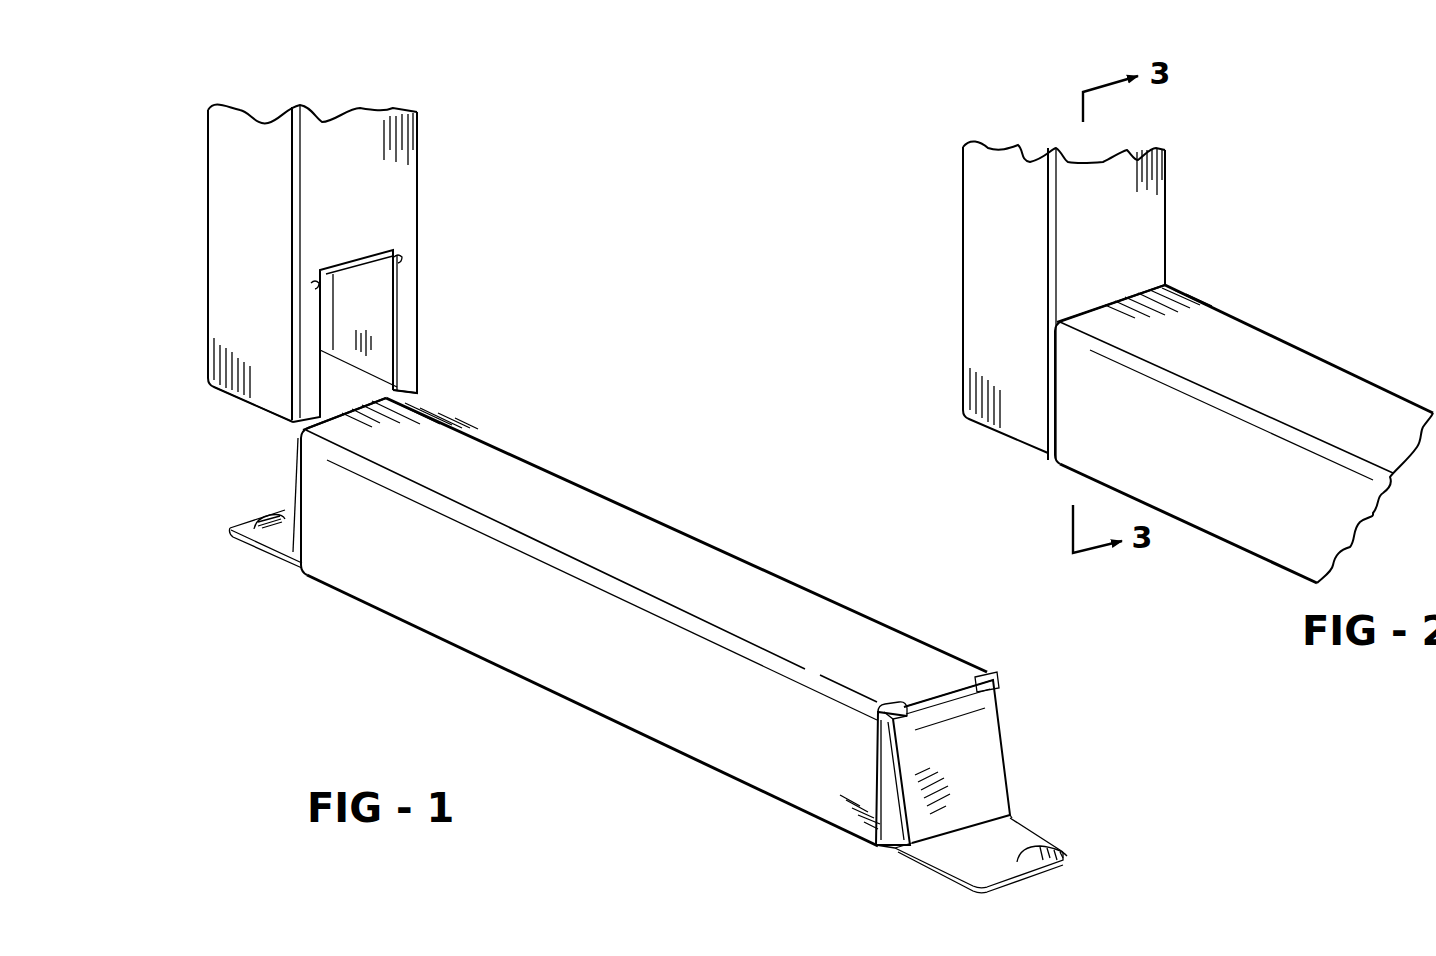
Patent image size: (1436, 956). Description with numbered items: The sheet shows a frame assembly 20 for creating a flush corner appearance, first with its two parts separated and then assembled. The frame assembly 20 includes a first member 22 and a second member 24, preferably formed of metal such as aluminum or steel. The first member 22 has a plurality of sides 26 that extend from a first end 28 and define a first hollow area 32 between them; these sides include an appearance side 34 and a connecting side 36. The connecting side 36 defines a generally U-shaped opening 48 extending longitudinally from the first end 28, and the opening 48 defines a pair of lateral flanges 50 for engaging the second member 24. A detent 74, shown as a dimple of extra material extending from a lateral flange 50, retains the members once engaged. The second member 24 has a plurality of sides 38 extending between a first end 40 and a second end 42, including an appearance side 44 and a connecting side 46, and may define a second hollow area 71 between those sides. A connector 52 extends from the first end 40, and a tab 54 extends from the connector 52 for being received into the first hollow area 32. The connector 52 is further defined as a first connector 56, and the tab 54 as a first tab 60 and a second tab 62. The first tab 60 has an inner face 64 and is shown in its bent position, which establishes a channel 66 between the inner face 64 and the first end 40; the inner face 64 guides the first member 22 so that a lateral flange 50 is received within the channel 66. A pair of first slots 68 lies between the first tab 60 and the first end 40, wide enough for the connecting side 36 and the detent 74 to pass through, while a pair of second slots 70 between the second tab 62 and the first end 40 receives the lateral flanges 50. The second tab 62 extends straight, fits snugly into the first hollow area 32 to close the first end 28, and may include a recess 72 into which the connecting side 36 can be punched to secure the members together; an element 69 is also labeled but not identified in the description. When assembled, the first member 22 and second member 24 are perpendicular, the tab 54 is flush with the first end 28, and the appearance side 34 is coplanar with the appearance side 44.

In FIG. 1, the frame assembly 20 is at (545, 305).
In FIG. 2, the frame assembly 20 is at (1313, 165).
In FIG. 1, the first member 22 is at (418, 175).
In FIG. 2, the first member 22 is at (1165, 213).
In FIG. 1, the second member 24 is at (632, 497).
In FIG. 2, the second member 24 is at (1327, 365).
In FIG. 1, the plurality of sides 26 is at (352, 165).
In FIG. 2, the plurality of sides 26 is at (1105, 180).
In FIG. 1, the first end 28 is at (410, 400).
In FIG. 1, the first hollow area 32 is at (355, 317).
In FIG. 1, the appearance side 34 is at (418, 238).
In FIG. 2, the appearance side 34 is at (988, 302).
In FIG. 1, the connecting side 36 is at (322, 180).
In FIG. 2, the connecting side 36 is at (1080, 183).
In FIG. 1, the plurality of sides 38 is at (760, 598).
In FIG. 2, the plurality of sides 38 is at (1262, 363).
In FIG. 1, the first end 40 is at (300, 445).
In FIG. 1, the second end 42 is at (970, 648).
In FIG. 1, the appearance side 44 is at (607, 693).
In FIG. 2, the appearance side 44 is at (1258, 525).
In FIG. 1, the connecting side 46 is at (714, 570).
In FIG. 2, the connecting side 46 is at (1360, 415).
In FIG. 1, the opening 48 is at (392, 345).
In FIG. 1, the lateral flanges 50 is at (410, 363).
In FIG. 1, the connector 52 is at (930, 695).
In FIG. 1, the tab 54 is at (1030, 805).
In FIG. 1, the first connector 56 is at (948, 690).
In FIG. 1, the first tab 60 is at (980, 780).
In FIG. 1, the second tab 62 is at (273, 538).
In FIG. 1, the inner face 64 is at (905, 808).
In FIG. 1, the channel 66 is at (896, 788).
In FIG. 1, the first slots 68 is at (985, 683).
In FIG. 1, the inner surface of end plate 69 is at (960, 705).
In FIG. 1, the second slots 70 is at (887, 850).
In FIG. 1, the second hollow area 71 is at (890, 860).
In FIG. 1, the recess 72 is at (280, 513).
In FIG. 1, the detent 74 is at (398, 260).